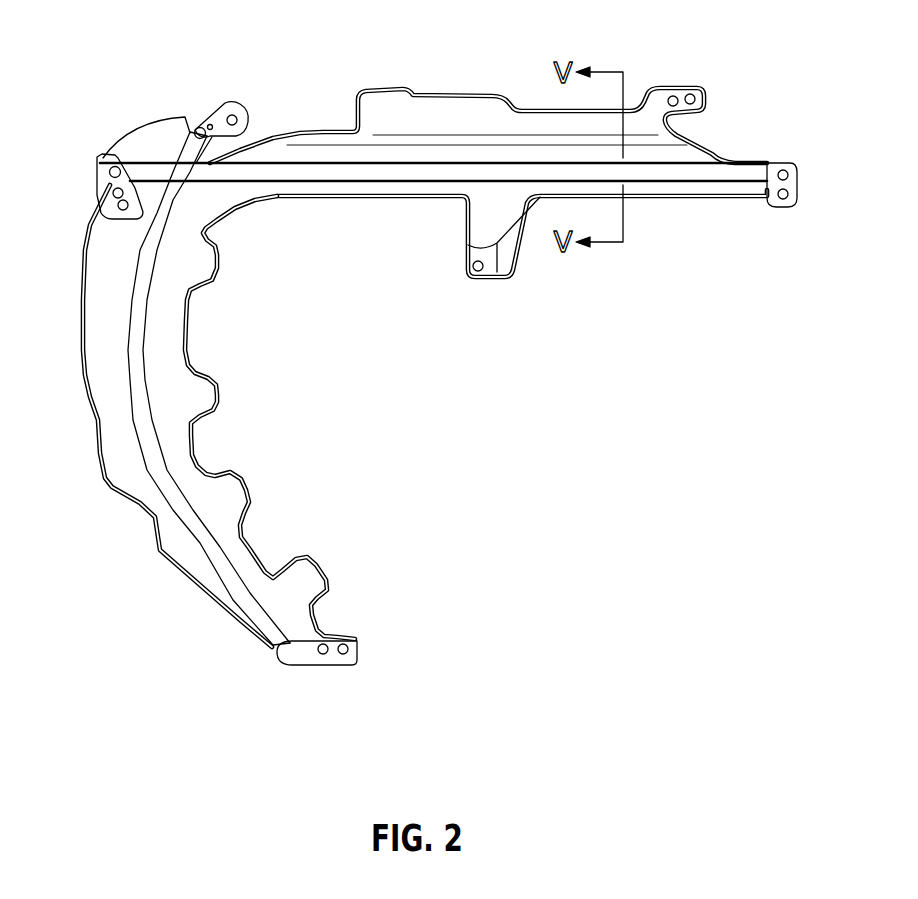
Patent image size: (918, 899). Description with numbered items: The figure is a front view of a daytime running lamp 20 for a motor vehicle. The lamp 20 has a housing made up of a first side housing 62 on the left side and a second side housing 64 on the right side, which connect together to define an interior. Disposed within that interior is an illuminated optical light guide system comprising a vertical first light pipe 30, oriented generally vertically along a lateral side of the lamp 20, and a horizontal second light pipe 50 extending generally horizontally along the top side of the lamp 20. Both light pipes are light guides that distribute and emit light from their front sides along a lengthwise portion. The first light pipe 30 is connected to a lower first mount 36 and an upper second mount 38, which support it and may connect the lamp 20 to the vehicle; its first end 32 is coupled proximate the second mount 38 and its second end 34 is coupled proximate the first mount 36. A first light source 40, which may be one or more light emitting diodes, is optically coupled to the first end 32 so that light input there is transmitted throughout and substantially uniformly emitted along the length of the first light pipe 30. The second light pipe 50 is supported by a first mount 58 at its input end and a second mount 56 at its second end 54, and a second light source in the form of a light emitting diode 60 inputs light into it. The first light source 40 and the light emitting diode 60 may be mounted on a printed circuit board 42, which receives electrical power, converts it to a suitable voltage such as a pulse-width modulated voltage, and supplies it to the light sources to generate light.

The lamp 20 is at (456, 385).
The first light pipe 30 is at (124, 297).
The first end 32 is at (200, 117).
The second end 34 is at (275, 647).
The first mount 36 is at (335, 658).
The second mount 38 is at (247, 120).
The first light source 40 is at (213, 118).
The printed circuit board 42 is at (148, 143).
The second light pipe 50 is at (451, 157).
The second end 54 is at (772, 170).
The second mount 56 is at (797, 180).
The first mount 58 is at (110, 190).
The light emitting diode 60 is at (110, 163).
The first side housing 62 is at (83, 385).
The second side housing 64 is at (222, 398).